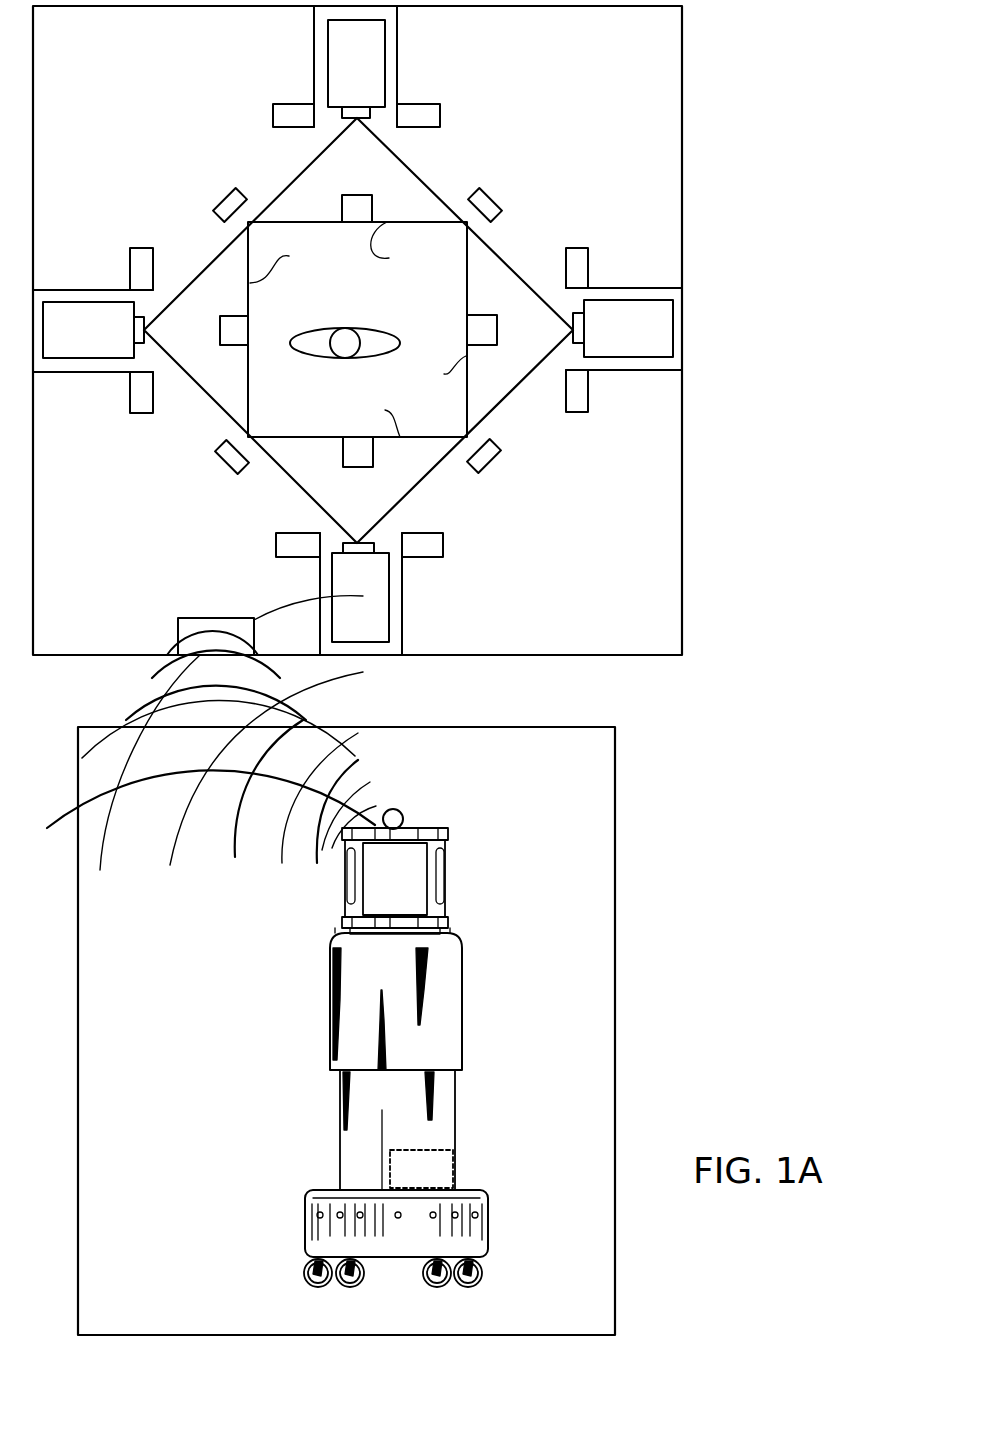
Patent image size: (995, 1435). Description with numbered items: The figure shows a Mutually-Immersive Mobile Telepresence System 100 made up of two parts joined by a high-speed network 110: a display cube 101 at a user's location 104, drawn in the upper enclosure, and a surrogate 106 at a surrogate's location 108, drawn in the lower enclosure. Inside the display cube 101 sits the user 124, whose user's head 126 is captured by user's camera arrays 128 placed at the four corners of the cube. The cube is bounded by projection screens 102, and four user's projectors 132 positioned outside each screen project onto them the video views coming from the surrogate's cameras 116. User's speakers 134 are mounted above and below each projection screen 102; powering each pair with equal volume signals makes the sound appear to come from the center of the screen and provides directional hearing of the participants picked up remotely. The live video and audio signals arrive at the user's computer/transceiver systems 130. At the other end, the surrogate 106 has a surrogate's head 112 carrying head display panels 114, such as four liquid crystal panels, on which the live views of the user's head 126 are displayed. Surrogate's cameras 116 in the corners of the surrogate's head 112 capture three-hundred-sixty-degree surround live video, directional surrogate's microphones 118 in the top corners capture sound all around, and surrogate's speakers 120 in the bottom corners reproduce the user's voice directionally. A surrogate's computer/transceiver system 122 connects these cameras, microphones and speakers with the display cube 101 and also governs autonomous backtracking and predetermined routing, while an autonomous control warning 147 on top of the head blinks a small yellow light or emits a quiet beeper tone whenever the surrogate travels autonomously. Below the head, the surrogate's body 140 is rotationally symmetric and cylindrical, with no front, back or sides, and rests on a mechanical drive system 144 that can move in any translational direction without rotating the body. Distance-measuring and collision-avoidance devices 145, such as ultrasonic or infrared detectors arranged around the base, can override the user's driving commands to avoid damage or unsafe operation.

The Mutually-Immersive Mobile Telepresence System 100 is at (718, 400).
The display cube 101 is at (438, 309).
The projection screens 102 is at (358, 329).
The user's location 104 is at (623, 68).
The surrogate 106 is at (268, 1058).
The surrogate's location 108 is at (583, 776).
The high-speed network 110 is at (413, 672).
The surrogate's head 112 is at (496, 878).
The head display panels 114 is at (423, 877).
The surrogate's cameras 116 is at (437, 880).
The surrogate's microphones 118 is at (408, 836).
The surrogate's speakers 120 is at (432, 935).
The surrogate's computer/transceiver system 122 is at (448, 1182).
The user 124 is at (291, 340).
The user's head 126 is at (345, 358).
The user's camera arrays 128 is at (220, 222).
The user's computer/transceiver systems 130 is at (243, 647).
The user's projectors 132 is at (383, 77).
The user's speakers 134 is at (358, 195).
The surrogate's body 140 is at (454, 1061).
The mechanical drive system 144 is at (283, 1272).
The distance-measuring and collision-avoidance devices 145 is at (380, 1216).
The autonomous control warning 147 is at (392, 809).